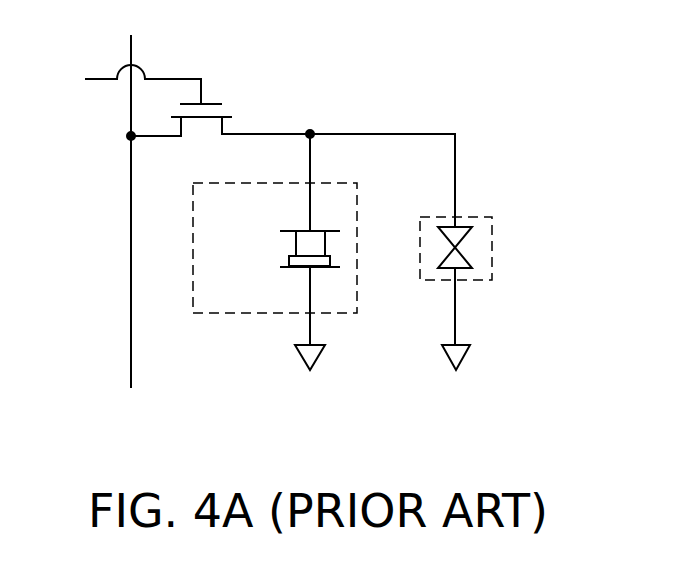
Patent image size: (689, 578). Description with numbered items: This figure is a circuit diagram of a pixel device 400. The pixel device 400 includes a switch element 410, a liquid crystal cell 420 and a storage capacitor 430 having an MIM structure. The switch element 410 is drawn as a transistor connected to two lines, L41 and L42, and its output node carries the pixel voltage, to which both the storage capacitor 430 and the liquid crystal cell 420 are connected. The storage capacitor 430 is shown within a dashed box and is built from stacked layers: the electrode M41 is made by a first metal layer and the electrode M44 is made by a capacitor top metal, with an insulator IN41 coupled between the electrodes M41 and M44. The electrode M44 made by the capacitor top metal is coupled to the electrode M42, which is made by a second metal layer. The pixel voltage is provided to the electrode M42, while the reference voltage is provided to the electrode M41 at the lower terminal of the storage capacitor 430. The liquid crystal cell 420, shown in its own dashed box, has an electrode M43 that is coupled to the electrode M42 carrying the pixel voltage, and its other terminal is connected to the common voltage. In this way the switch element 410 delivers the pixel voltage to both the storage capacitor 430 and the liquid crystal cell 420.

The pixel device 400 is at (311, 211).
The scan line L41 is at (104, 81).
The data line L42 is at (131, 48).
The switch element 410 is at (203, 128).
The storage capacitor 430 is at (272, 269).
The electrode M42 is at (296, 230).
The electrode M44 is at (296, 252).
The insulator IN41 is at (289, 259).
The electrode M41 is at (302, 268).
The liquid crystal cell 420 is at (481, 229).
The electrode M43 is at (464, 223).